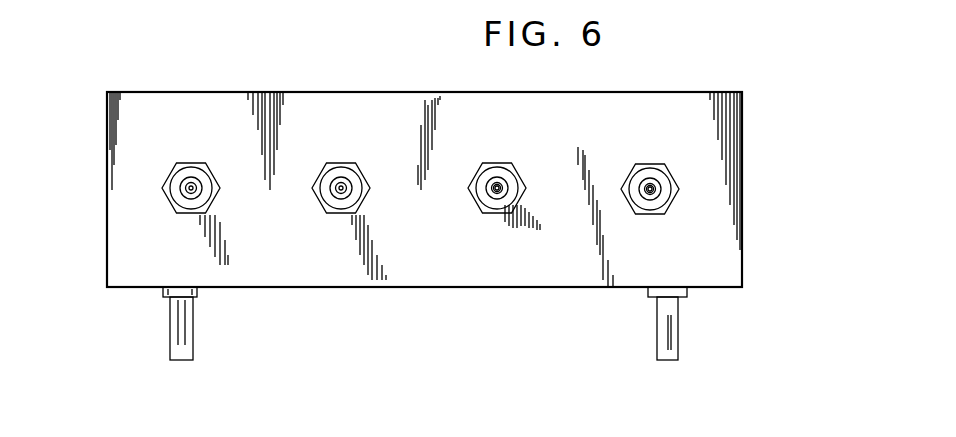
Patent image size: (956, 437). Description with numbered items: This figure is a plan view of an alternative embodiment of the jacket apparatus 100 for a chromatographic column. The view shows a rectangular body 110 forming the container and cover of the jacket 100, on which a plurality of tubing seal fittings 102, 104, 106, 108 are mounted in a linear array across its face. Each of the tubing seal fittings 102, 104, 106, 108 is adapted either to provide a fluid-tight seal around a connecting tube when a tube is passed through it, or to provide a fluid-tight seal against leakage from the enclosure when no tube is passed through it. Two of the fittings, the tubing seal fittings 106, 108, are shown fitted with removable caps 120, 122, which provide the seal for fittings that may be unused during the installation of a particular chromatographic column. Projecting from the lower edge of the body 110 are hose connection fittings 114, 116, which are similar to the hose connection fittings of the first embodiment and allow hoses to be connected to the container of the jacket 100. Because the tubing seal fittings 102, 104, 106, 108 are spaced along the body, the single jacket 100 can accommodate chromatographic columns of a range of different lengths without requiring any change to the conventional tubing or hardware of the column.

The alternative embodiment of the apparatus 100 is at (763, 183).
The tubing seal fitting 102 is at (202, 165).
The tubing seal fitting 104 is at (378, 140).
The tubing seal fitting 106 is at (538, 137).
The tubing seal fitting 108 is at (690, 137).
The housing 110 is at (288, 97).
The hose connection fitting 114 is at (107, 231).
The hose connection fitting 116 is at (678, 342).
The cap 120 is at (499, 196).
The cap 122 is at (657, 200).